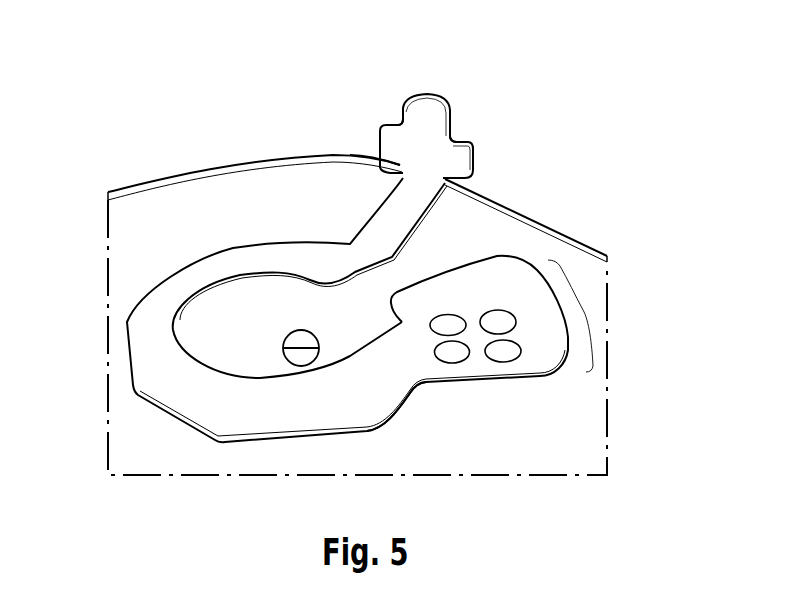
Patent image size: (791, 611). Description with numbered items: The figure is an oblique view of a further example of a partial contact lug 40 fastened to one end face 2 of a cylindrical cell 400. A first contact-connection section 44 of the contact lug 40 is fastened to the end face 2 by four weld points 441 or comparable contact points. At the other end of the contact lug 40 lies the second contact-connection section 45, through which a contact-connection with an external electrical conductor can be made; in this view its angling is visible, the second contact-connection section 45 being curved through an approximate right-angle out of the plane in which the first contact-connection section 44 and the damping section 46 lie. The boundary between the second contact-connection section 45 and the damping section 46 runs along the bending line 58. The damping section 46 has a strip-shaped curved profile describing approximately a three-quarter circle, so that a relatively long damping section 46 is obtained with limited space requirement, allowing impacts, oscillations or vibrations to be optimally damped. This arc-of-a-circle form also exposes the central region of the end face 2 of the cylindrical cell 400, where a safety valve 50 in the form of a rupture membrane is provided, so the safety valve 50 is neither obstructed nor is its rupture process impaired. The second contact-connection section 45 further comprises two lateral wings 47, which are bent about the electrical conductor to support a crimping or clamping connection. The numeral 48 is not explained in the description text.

The cylindrical cell 400 is at (222, 116).
The end face 2 is at (475, 230).
The bending line 58 is at (383, 172).
The second contact-connection section 45 is at (420, 138).
The lateral wings 47 is at (395, 136).
The contact lug 40 is at (156, 416).
The damping section 46 is at (147, 320).
The first contact-connection section 44 is at (584, 310).
The bent portion 48 is at (422, 402).
The weld points 441 is at (448, 323).
The safety valve 50 is at (285, 335).